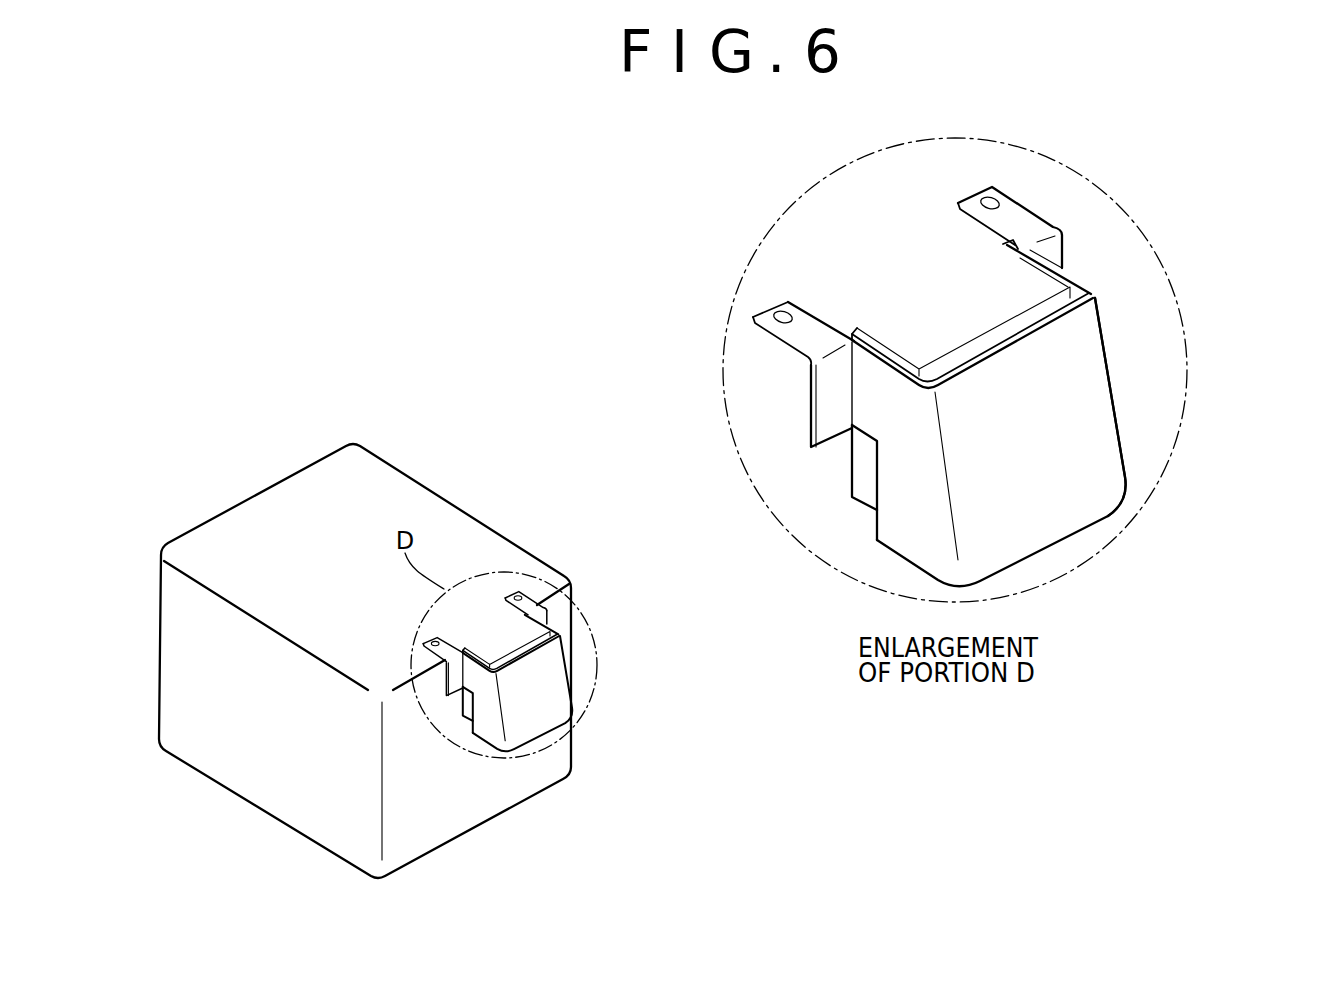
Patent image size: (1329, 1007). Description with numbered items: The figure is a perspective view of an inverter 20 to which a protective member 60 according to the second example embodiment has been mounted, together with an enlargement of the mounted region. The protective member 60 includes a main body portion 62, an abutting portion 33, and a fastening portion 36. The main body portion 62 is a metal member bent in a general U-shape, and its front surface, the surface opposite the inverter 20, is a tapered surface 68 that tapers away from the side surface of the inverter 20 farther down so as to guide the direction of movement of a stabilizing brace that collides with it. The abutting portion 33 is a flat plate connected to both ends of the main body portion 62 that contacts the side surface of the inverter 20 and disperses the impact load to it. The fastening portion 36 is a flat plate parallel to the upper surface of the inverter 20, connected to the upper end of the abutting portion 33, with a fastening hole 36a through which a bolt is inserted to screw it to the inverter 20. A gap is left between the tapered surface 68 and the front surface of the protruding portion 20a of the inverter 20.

The inverter 20 is at (385, 475).
The protruding portion 20a is at (540, 632).
The protective member 60 is at (1066, 561).
The main body portion 62 is at (1193, 407).
The tapered surface 68 is at (1103, 363).
The fastening portion 36 is at (1029, 217).
The fastening hole 36a is at (992, 198).
The abutting portion 33 is at (826, 379).